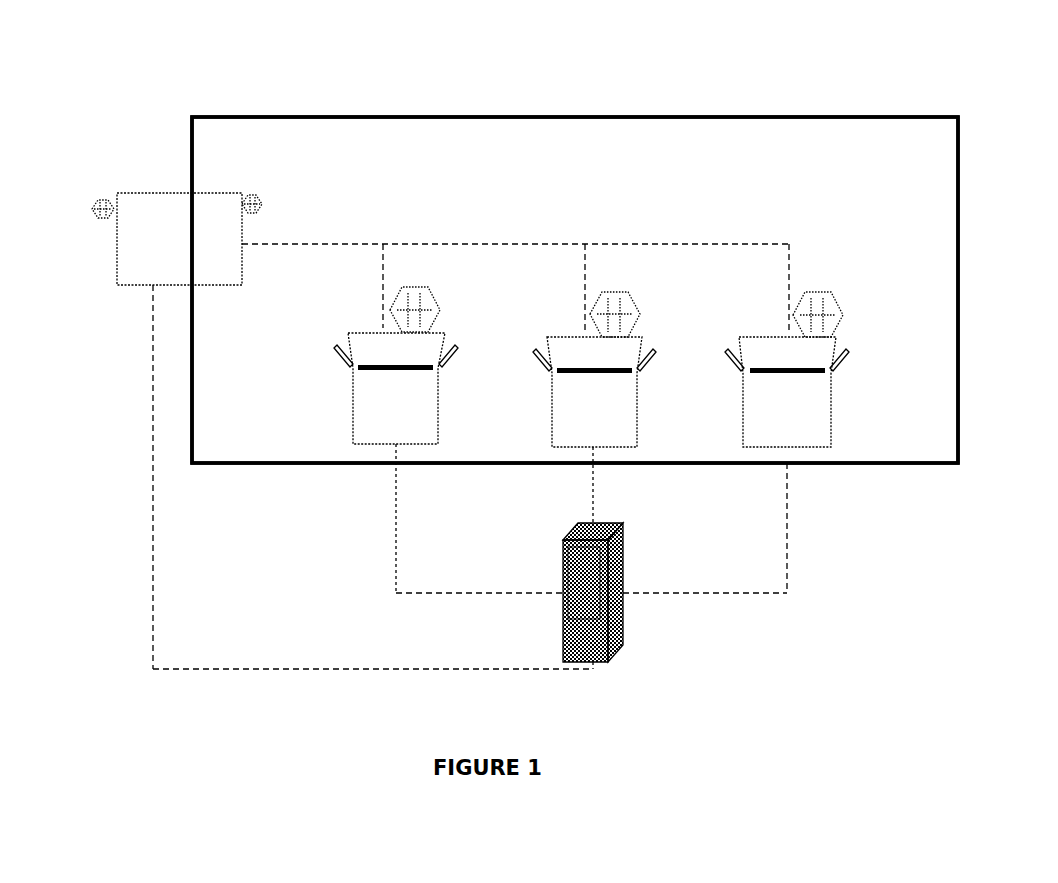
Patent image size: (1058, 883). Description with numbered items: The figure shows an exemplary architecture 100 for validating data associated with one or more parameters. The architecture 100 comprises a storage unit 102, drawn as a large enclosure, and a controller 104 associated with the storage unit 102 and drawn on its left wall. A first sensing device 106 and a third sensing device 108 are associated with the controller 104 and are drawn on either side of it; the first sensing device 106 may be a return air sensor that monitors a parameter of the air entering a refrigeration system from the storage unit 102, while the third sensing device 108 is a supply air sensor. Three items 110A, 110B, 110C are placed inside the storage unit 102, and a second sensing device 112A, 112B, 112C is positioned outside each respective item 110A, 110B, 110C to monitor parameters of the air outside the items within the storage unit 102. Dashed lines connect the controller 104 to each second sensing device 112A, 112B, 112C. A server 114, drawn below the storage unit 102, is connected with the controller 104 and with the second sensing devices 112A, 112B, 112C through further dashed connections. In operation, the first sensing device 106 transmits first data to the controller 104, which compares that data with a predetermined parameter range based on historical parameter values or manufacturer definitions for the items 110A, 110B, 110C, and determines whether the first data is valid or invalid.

The architecture 100 is at (515, 80).
The storage unit 102 is at (362, 116).
The controller 104 is at (205, 190).
The first sensing device 106 is at (90, 210).
The third sensing device 108 is at (262, 201).
The item 110A is at (442, 408).
The item 110B is at (637, 428).
The item 110C is at (831, 428).
The second sensing device 112A is at (438, 305).
The second sensing device 112B is at (640, 313).
The second sensing device 112C is at (843, 313).
The server 114 is at (622, 528).